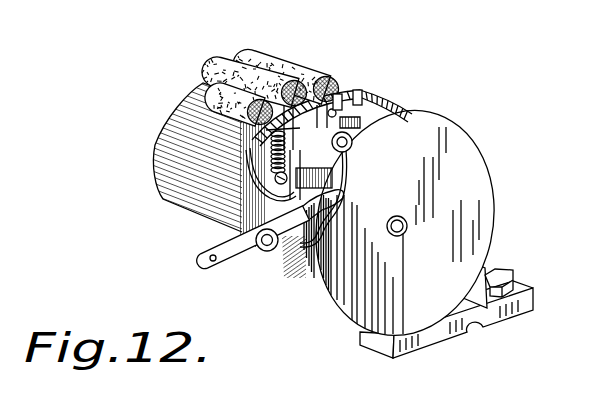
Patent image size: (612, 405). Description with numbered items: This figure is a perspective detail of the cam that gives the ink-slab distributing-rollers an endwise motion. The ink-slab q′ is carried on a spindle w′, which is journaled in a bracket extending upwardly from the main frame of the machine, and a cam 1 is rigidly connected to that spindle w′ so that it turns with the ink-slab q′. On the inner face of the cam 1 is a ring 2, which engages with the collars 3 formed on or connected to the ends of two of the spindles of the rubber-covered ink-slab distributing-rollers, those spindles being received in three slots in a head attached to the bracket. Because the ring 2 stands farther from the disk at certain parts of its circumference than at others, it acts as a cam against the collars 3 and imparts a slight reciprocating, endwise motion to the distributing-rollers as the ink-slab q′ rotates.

The cam 1 is at (405, 223).
The ring 2 is at (313, 245).
The collars 3 is at (355, 148).
The ink-slab q′ is at (160, 125).
The spindle w′ is at (405, 234).